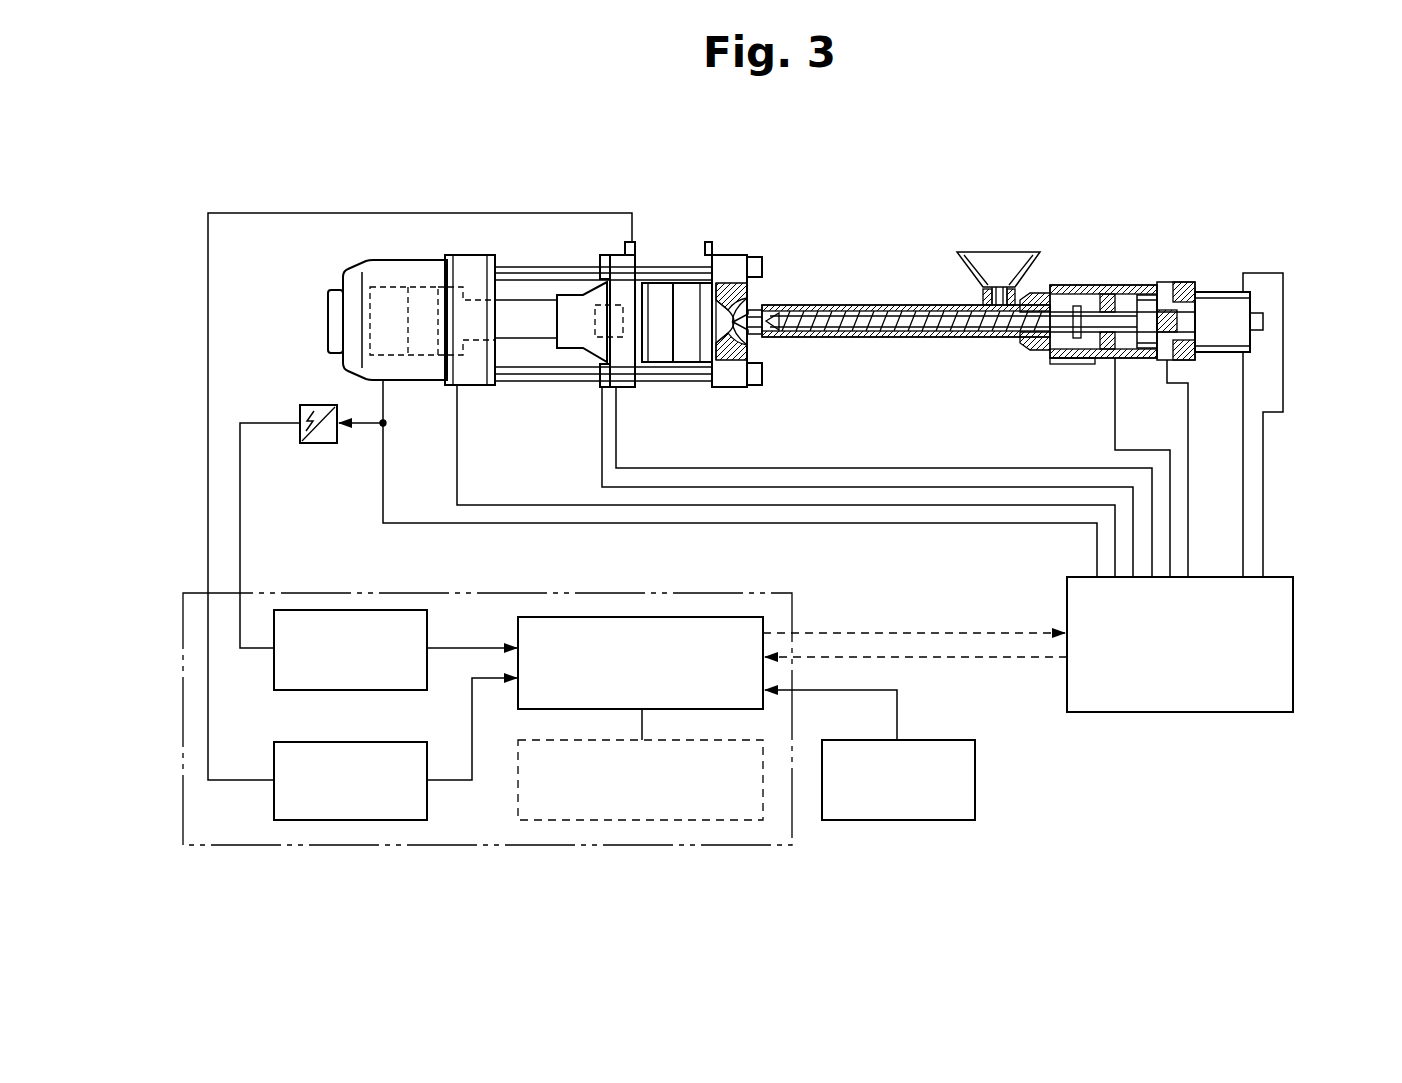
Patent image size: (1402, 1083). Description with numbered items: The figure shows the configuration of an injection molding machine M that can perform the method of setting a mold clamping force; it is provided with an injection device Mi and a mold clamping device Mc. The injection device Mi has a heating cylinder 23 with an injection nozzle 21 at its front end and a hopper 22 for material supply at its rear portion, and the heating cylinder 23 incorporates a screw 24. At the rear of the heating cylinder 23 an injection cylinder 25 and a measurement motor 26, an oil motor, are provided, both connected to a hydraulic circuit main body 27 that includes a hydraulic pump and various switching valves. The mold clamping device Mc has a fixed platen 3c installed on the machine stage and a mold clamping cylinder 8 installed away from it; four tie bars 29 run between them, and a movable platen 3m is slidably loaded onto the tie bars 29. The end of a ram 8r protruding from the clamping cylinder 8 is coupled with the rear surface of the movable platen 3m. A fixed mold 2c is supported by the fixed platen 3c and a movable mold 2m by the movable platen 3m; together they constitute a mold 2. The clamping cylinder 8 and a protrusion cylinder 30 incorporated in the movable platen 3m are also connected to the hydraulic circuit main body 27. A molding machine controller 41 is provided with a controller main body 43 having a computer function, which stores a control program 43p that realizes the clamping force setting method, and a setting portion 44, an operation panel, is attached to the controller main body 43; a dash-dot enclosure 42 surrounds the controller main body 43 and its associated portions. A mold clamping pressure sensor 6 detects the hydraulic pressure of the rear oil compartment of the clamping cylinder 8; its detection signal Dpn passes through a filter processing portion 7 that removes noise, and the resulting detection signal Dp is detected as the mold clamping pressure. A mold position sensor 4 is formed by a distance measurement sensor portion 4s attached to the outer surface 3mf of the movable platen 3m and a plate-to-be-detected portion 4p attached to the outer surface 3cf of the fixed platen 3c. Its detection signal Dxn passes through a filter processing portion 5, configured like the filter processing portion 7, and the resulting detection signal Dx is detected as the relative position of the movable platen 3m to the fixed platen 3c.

The injection molding machine M is at (1288, 241).
The mold clamping device Mc is at (488, 187).
The injection device Mi is at (1064, 240).
The mold clamping cylinder 8 is at (397, 262).
The ram 8r is at (517, 343).
The tie bars 29 is at (505, 255).
The movable platen 3m is at (595, 335).
The outer surface of the movable platen 3mf is at (620, 255).
The protrusion cylinder 30 is at (594, 338).
The mold position sensor 4 is at (675, 192).
The distance measurement sensor portion 4s is at (636, 243).
The plate-to-be-detected portion 4p is at (709, 243).
The movable mold 2m is at (657, 364).
The fixed mold 2c is at (695, 364).
The mold 2 is at (702, 374).
The fixed platen 3c is at (753, 288).
The outer surface of the fixed platen 3cf is at (738, 253).
The injection nozzle 21 is at (763, 330).
The hopper 22 is at (986, 250).
The heating cylinder 23 is at (860, 340).
The screw 24 is at (912, 305).
The injection cylinder 25 is at (1138, 285).
The measurement motor 26 is at (1225, 292).
The hydraulic circuit main body 27 is at (1297, 622).
The mold clamping pressure sensor 6 is at (305, 404).
The detection signal Dxn is at (208, 318).
The detection signal Dpn is at (240, 487).
The filter processing portion 7 is at (355, 610).
The filter processing portion 5 is at (350, 719).
The detection signal Dp is at (483, 647).
The detection signal Dx is at (473, 768).
The molding machine controller 41 is at (1037, 781).
The control unit 42 is at (792, 612).
The controller main body 43 is at (650, 617).
The control program 43p is at (666, 820).
The setting portion 44 is at (958, 740).